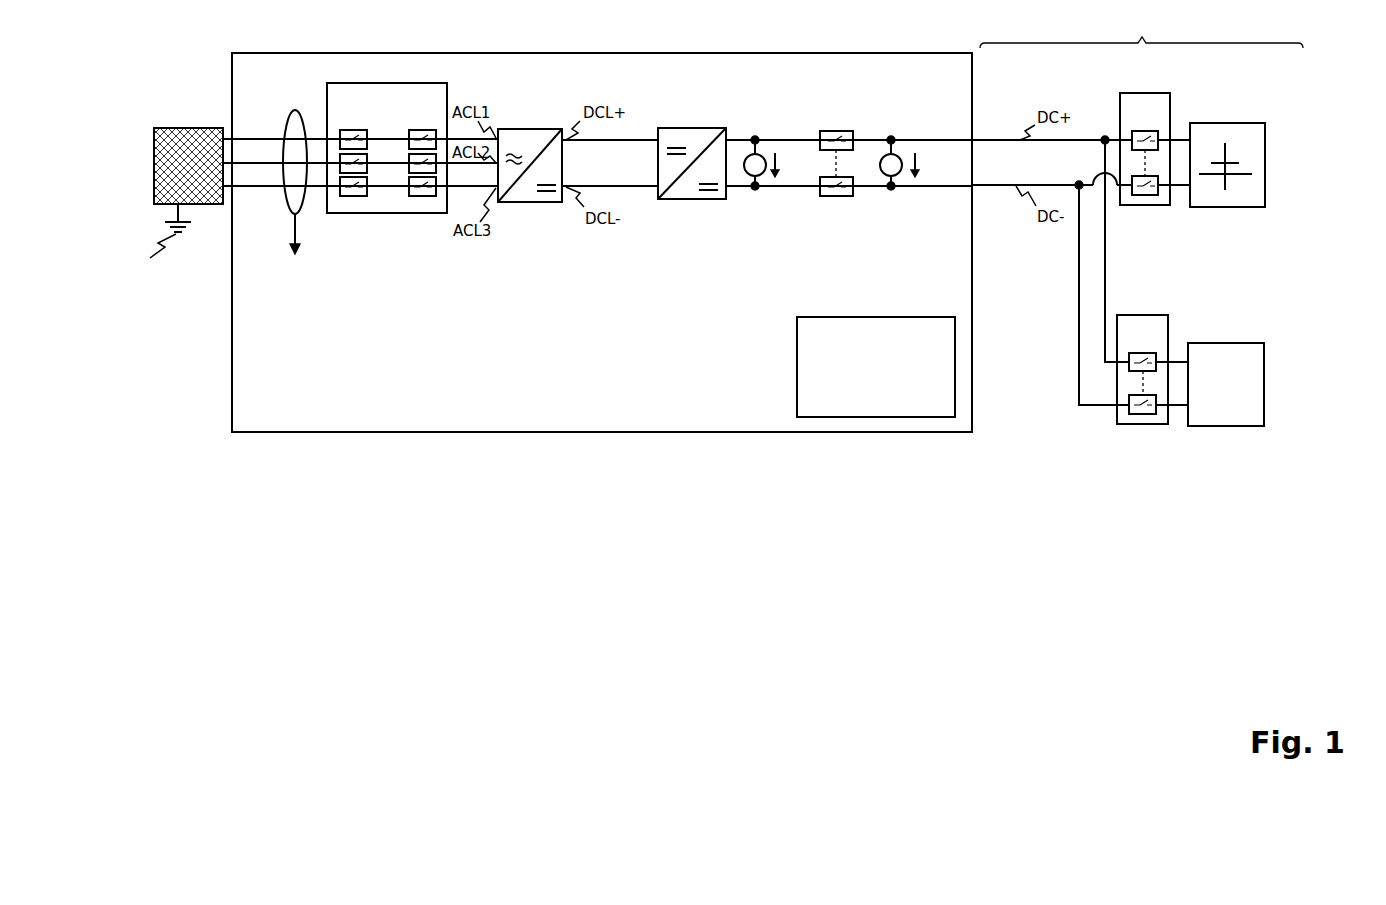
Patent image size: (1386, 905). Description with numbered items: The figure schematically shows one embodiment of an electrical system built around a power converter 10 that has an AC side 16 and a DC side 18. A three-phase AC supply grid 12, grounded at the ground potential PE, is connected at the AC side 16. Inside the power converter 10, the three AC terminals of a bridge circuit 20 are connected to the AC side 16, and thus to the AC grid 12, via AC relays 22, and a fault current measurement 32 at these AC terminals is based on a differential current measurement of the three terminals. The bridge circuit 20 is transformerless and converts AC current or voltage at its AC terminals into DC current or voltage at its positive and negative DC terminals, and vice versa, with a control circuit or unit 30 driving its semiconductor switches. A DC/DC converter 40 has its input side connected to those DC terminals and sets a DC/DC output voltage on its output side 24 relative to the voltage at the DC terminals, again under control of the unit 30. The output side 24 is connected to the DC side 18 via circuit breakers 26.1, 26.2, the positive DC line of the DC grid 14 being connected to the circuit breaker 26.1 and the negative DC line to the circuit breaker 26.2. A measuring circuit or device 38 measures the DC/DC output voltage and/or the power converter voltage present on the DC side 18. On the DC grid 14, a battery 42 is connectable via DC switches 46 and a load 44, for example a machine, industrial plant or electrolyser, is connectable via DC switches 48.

The power converter 10 is at (270, 84).
The three-phase AC supply grid 12 is at (161, 127).
The DC grid 14 is at (1141, 28).
The AC side 16 is at (231, 124).
The DC side 18 is at (979, 137).
The bridge circuit 20 is at (526, 128).
The AC relays 22 is at (363, 114).
The output side 24 is at (731, 127).
The circuit breaker 26.1 is at (835, 130).
The circuit breaker 26.2 is at (835, 197).
The control circuit or unit 30 is at (937, 352).
The fault current measurement 32 is at (295, 110).
The measuring circuit or device 38 is at (758, 138).
The DC/DC converter 40 is at (690, 127).
The battery 42 is at (1260, 151).
The load 44 is at (1255, 373).
The DC switches 46 is at (1158, 123).
The DC switches 48 is at (1155, 343).